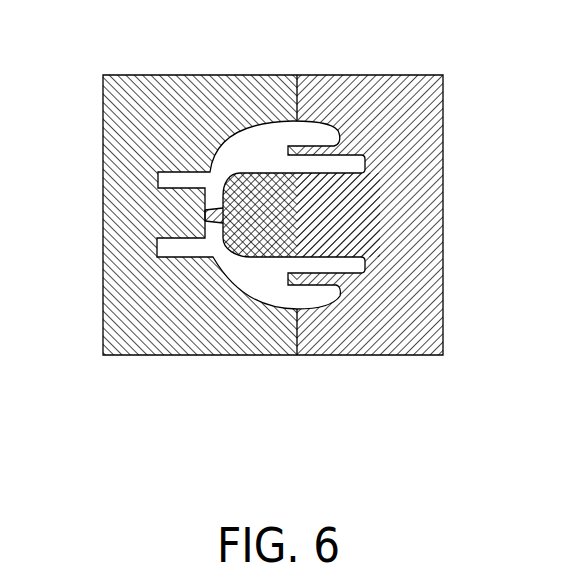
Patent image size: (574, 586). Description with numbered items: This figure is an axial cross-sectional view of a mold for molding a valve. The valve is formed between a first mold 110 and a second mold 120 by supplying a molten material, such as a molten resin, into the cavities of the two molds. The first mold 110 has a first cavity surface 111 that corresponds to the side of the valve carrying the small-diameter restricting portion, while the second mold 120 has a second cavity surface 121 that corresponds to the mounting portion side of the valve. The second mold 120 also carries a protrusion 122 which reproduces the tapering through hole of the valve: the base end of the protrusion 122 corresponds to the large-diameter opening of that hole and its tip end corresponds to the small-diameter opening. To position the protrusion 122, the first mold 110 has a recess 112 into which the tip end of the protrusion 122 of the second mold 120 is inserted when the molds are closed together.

The first mold 110 is at (125, 68).
The second mold 120 is at (428, 70).
The first cavity surface 111 is at (257, 300).
The second cavity surface 121 is at (312, 306).
The recess 112 is at (207, 217).
The protrusion 122 is at (212, 208).